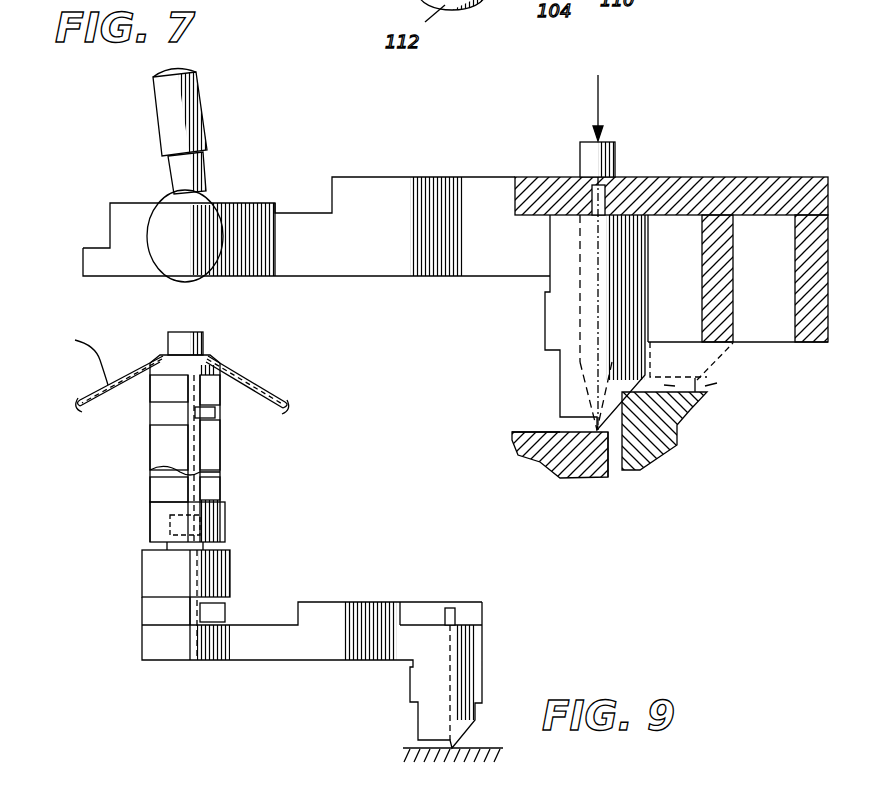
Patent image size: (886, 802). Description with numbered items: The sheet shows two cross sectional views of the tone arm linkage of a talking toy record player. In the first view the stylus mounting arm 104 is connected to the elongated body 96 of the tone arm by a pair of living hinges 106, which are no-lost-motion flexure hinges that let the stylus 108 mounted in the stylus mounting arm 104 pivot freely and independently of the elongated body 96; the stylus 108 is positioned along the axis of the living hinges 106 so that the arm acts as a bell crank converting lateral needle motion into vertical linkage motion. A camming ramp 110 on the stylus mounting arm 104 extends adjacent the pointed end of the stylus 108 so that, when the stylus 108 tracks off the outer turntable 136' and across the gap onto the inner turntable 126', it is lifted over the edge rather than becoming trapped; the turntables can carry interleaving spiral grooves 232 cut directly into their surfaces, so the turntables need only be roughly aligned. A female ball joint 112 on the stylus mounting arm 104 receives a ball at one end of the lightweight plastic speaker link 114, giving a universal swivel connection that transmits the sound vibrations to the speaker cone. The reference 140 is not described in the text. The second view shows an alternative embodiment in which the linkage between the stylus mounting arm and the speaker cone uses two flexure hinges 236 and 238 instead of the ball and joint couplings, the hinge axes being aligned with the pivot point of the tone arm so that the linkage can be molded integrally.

In FIG. 7, the elongated body 96 is at (782, 177).
In FIG. 7, the stylus mounting arm 104 is at (383, 257).
In FIG. 7, the living hinges 106 is at (622, 177).
In FIG. 7, the stylus 108 is at (587, 428).
In FIG. 7, the camming ramp 110 is at (668, 435).
In FIG. 7, the female ball joint 112 is at (248, 255).
In FIG. 7, the speaker link 114 is at (148, 108).
In FIG. 9, the speaker link 114 is at (150, 458).
In FIG. 7, the inner turntable 126' is at (560, 467).
In FIG. 7, the outer turntable 136' is at (717, 382).
In FIG. 7, the gap 140 is at (612, 470).
In FIG. 7, the interleaving spiral grooves 232 is at (520, 434).
In FIG. 9, the flexure hinge 236 is at (205, 412).
In FIG. 9, the flexure hinge 238 is at (190, 612).